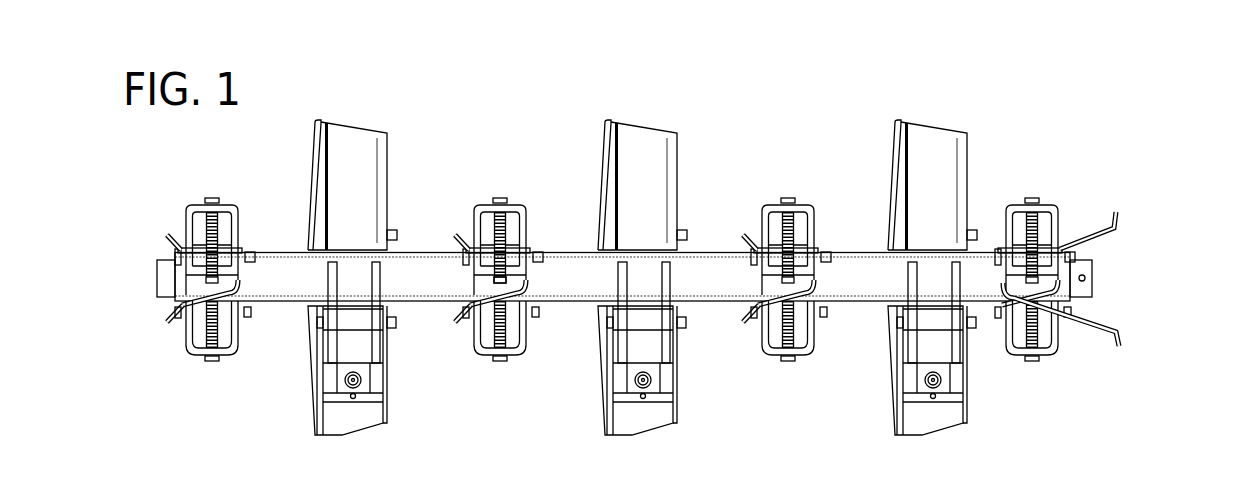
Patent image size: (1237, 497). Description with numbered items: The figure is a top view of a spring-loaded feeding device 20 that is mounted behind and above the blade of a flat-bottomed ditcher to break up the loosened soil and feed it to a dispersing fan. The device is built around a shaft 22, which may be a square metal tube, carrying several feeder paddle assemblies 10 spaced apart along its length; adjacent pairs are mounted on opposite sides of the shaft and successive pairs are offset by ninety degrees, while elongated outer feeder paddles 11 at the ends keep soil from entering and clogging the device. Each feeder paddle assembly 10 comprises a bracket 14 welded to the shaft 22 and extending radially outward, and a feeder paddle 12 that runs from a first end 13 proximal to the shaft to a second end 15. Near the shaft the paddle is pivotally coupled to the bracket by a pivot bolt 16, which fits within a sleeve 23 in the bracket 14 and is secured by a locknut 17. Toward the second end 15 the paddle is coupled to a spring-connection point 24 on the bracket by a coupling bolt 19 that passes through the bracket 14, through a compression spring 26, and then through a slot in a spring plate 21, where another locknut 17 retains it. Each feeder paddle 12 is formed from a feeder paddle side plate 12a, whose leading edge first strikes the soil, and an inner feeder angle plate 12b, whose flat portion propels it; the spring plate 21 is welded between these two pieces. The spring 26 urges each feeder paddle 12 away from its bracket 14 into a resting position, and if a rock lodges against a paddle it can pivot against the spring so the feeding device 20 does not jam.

The spring-loaded feeding device 20 is at (870, 64).
The shaft 22 is at (417, 267).
The first end 13 is at (297, 240).
The spring 26 is at (505, 228).
The coupling bolt 19 is at (498, 362).
The feeder paddle assembly 10 is at (793, 185).
The spring-connection point 24 is at (797, 363).
The sleeve 23 is at (1043, 250).
The outer feeder paddle 11 is at (1127, 220).
The second end 15 is at (315, 130).
The pivot bolt 16 is at (322, 325).
The locknut 17 is at (392, 333).
The feeder paddle side plate 12a is at (604, 127).
The inner feeder angle plate 12b is at (640, 123).
The feeder paddle 12 is at (923, 138).
The bracket 14 is at (957, 350).
The spring plate 21 is at (912, 388).